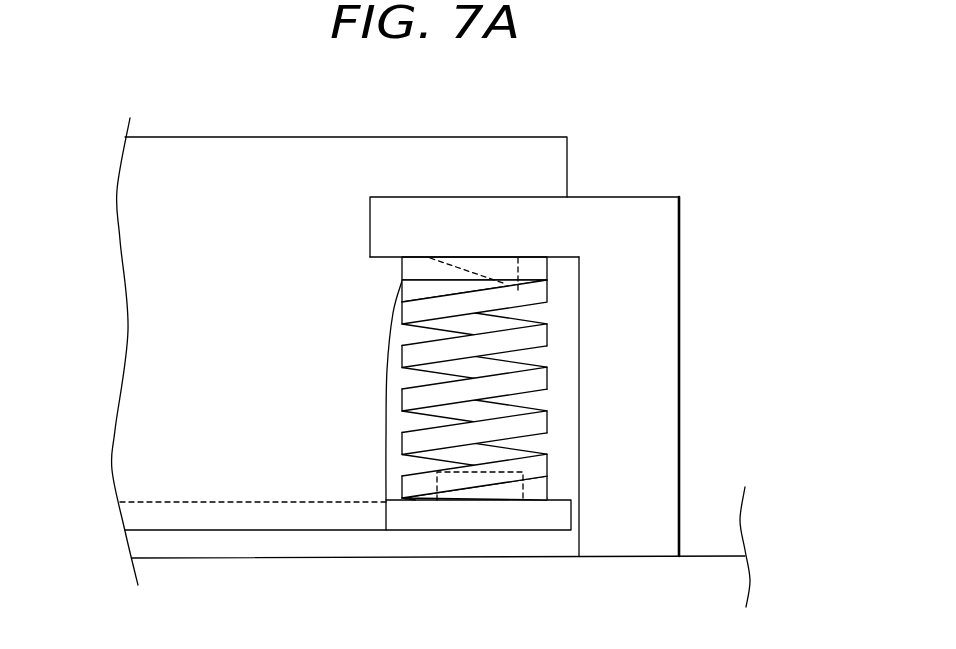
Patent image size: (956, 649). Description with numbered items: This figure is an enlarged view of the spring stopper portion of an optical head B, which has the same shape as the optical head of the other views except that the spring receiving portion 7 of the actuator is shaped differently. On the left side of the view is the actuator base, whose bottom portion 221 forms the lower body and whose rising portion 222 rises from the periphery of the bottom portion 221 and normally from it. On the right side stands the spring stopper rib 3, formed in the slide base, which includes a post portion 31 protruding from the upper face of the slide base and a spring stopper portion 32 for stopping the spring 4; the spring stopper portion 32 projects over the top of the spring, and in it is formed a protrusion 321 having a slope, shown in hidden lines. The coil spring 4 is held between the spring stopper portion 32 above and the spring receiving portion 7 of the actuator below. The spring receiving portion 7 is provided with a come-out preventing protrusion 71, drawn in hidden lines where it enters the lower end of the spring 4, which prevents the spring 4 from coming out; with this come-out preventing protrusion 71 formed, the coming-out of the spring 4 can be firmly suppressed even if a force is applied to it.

The optical head B is at (98, 109).
The rising portion 222 is at (242, 222).
The bottom portion 221 is at (232, 510).
The spring stopper rib 3 is at (681, 293).
The post portion 31 is at (640, 380).
The spring stopper portion 32 is at (535, 240).
The protrusion 321 is at (474, 262).
The spring 4 is at (412, 311).
The spring receiving portion 7 is at (425, 516).
The come-out preventing protrusion 71 is at (507, 490).